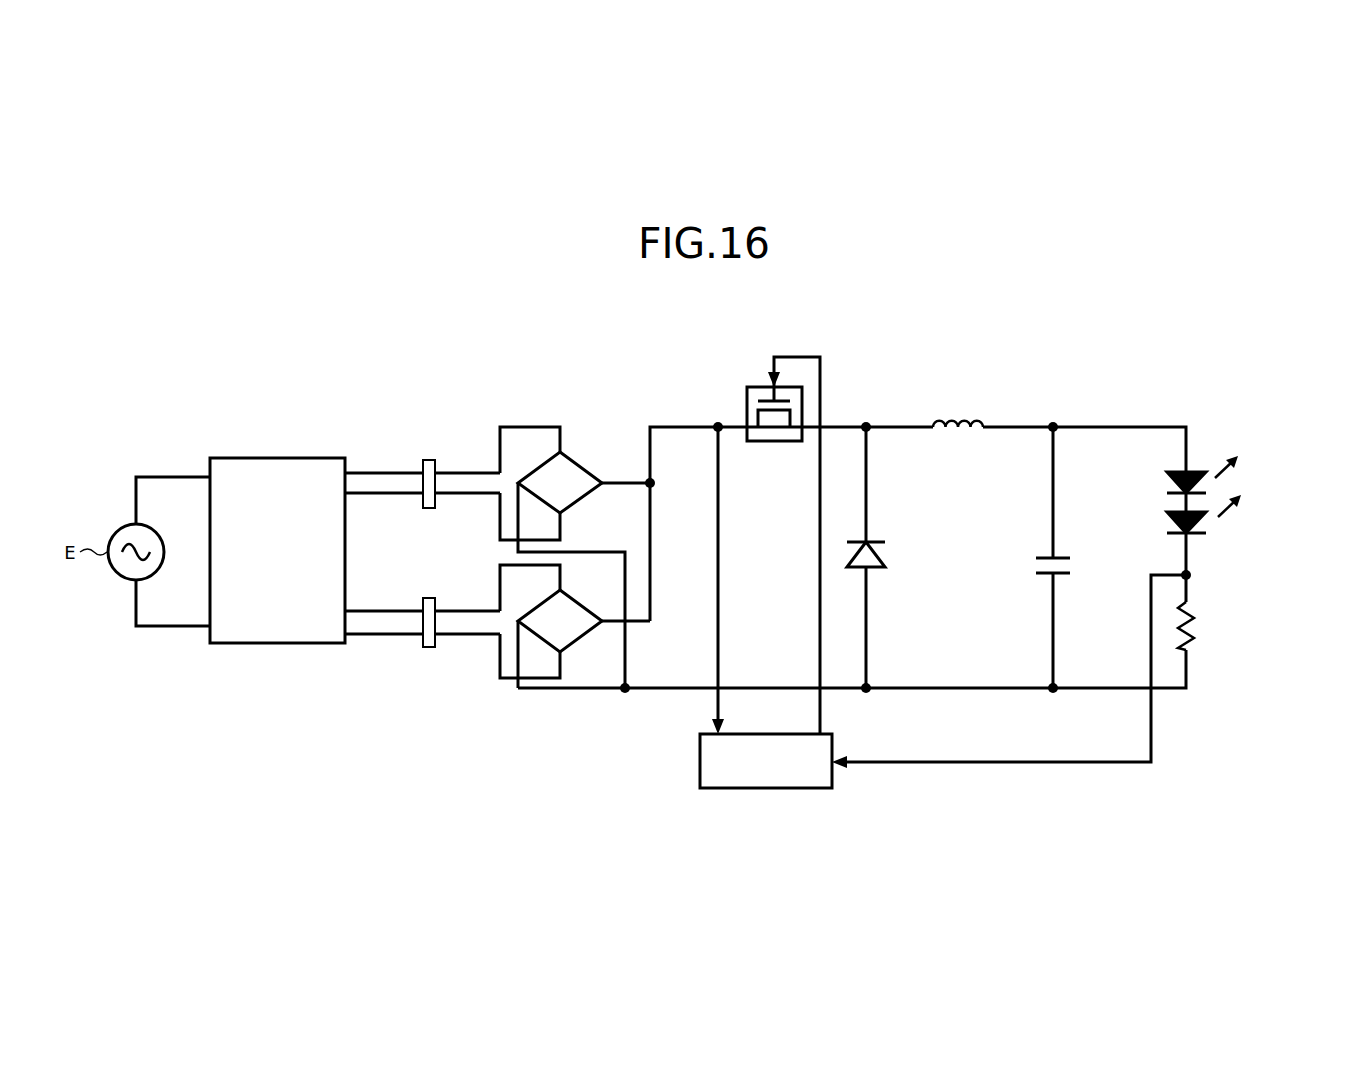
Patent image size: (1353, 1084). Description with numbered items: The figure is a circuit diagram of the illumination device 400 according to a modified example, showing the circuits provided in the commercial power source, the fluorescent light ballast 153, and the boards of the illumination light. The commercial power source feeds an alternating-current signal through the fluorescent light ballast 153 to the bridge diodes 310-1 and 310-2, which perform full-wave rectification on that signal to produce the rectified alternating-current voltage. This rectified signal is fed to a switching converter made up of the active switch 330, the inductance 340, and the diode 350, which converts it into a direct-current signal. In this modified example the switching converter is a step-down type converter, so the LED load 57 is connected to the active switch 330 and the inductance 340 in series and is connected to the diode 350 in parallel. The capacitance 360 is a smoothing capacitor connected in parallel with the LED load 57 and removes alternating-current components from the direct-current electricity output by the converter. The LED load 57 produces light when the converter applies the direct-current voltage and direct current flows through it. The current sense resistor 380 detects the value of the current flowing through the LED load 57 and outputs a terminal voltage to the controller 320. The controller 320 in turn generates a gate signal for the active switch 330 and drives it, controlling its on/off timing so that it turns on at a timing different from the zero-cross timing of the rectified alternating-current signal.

The fluorescent light ballast 153 is at (303, 458).
The bridge diode 310-1 is at (578, 452).
The bridge diode 310-2 is at (583, 655).
The controller 320 is at (700, 762).
The active switch 330 is at (756, 384).
The inductance 340 is at (975, 415).
The diode 350 is at (877, 572).
The capacitance 360 is at (1066, 556).
The current sense resistor 380 is at (1196, 632).
The LED load 57 is at (1257, 463).
The illumination device 400 is at (1242, 380).